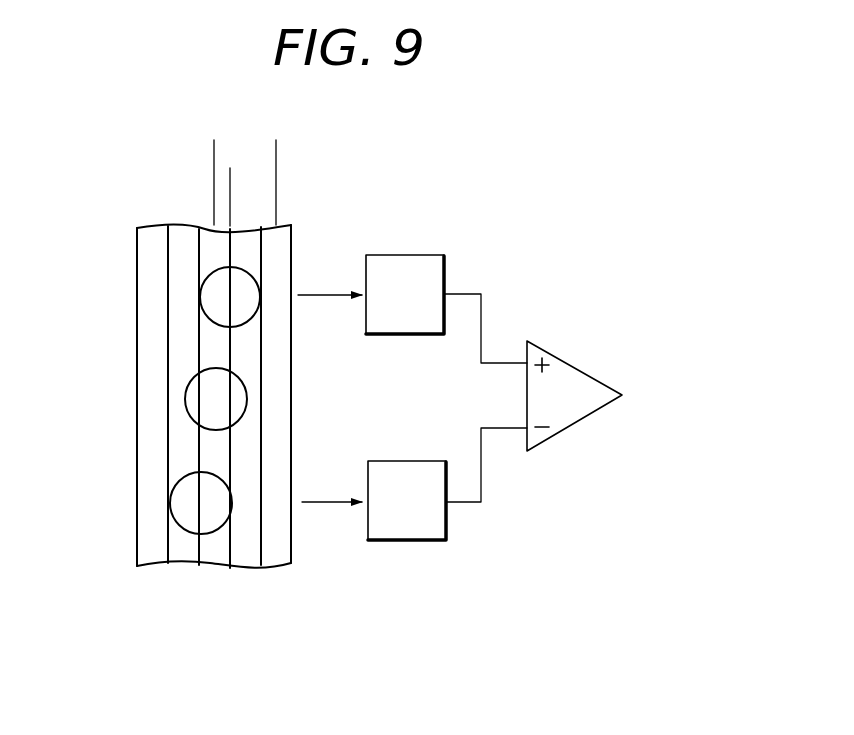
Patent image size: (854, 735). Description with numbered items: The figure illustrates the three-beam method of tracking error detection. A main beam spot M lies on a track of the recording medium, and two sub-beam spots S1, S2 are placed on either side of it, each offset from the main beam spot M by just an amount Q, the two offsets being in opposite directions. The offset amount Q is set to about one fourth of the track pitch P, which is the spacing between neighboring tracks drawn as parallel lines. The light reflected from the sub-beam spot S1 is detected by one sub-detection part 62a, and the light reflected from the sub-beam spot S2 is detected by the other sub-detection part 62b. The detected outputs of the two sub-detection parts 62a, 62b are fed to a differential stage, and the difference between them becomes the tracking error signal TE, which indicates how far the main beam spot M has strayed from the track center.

The sub-detection part 62a is at (423, 542).
The sub-detection part 62b is at (413, 255).
The sub-beam spot S1 is at (178, 502).
The sub-beam spot S2 is at (205, 296).
The main beam spot M is at (188, 396).
The track pitch P is at (214, 147).
The offset amount Q is at (257, 183).
The tracking error signal TE is at (622, 395).